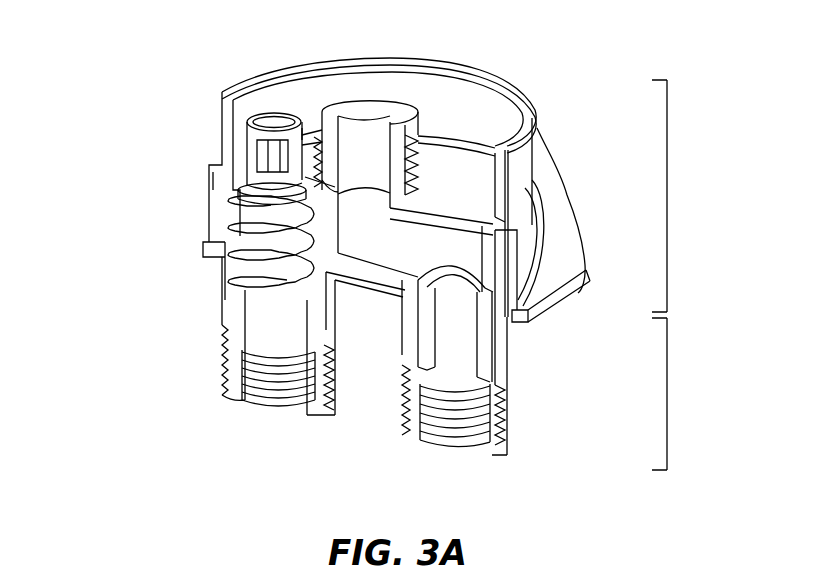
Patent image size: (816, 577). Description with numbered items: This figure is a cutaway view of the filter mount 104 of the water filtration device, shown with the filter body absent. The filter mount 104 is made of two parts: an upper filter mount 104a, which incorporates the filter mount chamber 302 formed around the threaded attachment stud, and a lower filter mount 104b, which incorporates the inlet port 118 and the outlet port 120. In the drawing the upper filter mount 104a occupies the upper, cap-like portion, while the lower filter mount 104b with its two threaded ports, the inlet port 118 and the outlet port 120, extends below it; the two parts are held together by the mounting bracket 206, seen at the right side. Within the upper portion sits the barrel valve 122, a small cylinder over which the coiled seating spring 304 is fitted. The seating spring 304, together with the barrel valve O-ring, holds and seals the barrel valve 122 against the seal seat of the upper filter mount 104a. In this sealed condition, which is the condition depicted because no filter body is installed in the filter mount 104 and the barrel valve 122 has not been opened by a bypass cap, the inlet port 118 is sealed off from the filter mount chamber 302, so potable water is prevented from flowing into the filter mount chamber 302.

The filter mount 104 is at (98, 59).
The upper filter mount 104a is at (668, 196).
The lower filter mount 104b is at (668, 436).
The inlet port 118 is at (273, 342).
The outlet port 120 is at (462, 383).
The barrel valve 122 is at (268, 152).
The mounting bracket 206 is at (556, 272).
The filter mount chamber 302 is at (463, 168).
The seating spring 304 is at (232, 258).